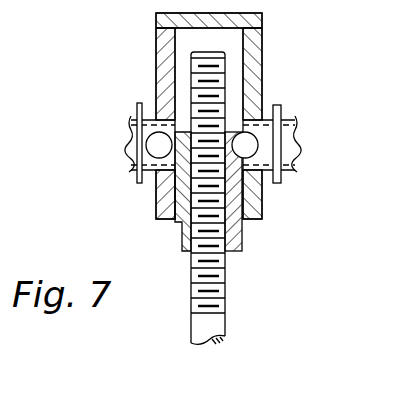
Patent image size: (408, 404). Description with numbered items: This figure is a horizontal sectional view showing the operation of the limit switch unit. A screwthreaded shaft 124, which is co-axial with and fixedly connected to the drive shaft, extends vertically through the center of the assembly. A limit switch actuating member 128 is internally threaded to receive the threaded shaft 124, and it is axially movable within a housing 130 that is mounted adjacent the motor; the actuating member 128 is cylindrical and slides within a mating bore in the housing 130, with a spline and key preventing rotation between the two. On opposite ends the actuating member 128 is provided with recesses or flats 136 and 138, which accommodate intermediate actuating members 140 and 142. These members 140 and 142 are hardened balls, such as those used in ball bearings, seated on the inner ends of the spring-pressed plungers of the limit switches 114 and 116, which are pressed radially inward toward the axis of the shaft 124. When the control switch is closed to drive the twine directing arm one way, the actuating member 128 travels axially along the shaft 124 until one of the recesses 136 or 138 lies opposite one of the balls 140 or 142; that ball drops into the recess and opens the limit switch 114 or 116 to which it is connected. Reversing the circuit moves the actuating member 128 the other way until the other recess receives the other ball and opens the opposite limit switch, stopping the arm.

The housing 130 is at (263, 50).
The recess or flat 138 is at (226, 130).
The screwthreaded shaft 124 is at (226, 307).
The recess or flat 136 is at (183, 240).
The limit switch actuating member 128 is at (242, 223).
The limit switch 114 is at (139, 121).
The limit switch 116 is at (294, 124).
The intermediate actuating member 140 is at (158, 151).
The intermediate actuating member 142 is at (248, 151).